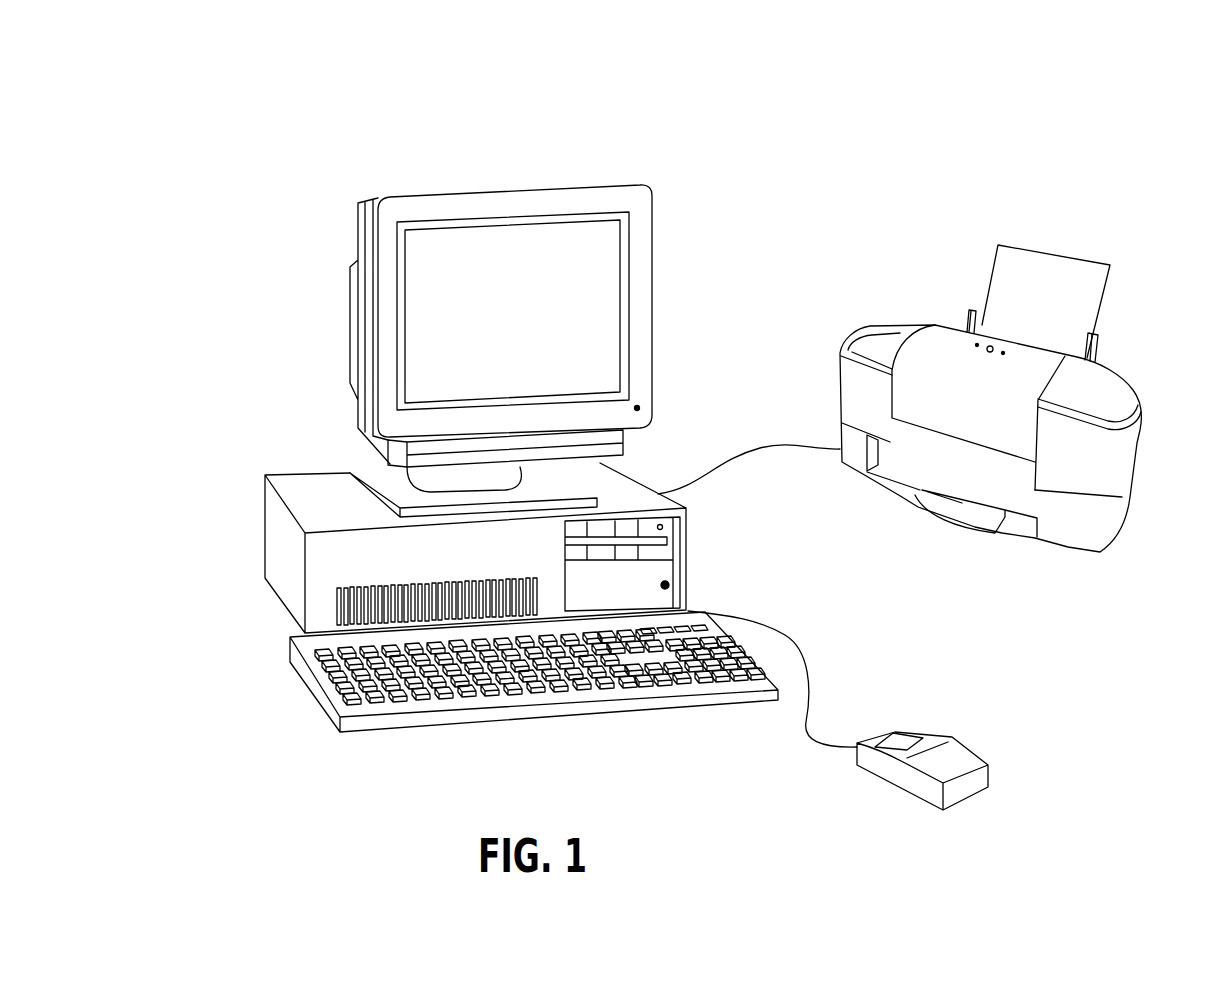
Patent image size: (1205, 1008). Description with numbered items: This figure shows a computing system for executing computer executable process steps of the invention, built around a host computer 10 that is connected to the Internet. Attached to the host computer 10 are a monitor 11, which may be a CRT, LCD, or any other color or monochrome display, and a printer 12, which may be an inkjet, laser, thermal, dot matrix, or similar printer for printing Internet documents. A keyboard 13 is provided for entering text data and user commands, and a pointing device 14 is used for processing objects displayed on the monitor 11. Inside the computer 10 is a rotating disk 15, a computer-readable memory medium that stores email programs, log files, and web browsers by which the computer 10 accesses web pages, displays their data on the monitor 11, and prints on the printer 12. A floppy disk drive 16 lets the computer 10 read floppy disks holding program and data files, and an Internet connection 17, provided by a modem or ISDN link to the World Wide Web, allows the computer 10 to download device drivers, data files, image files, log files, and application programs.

The host computer 10 is at (716, 137).
The monitor 11 is at (600, 295).
The printer 12 is at (885, 325).
The keyboard 13 is at (380, 703).
The pointing device 14 is at (988, 780).
The rotating disk 15 is at (657, 595).
The floppy disk drive 16 is at (657, 548).
The Internet connection 17 is at (263, 497).